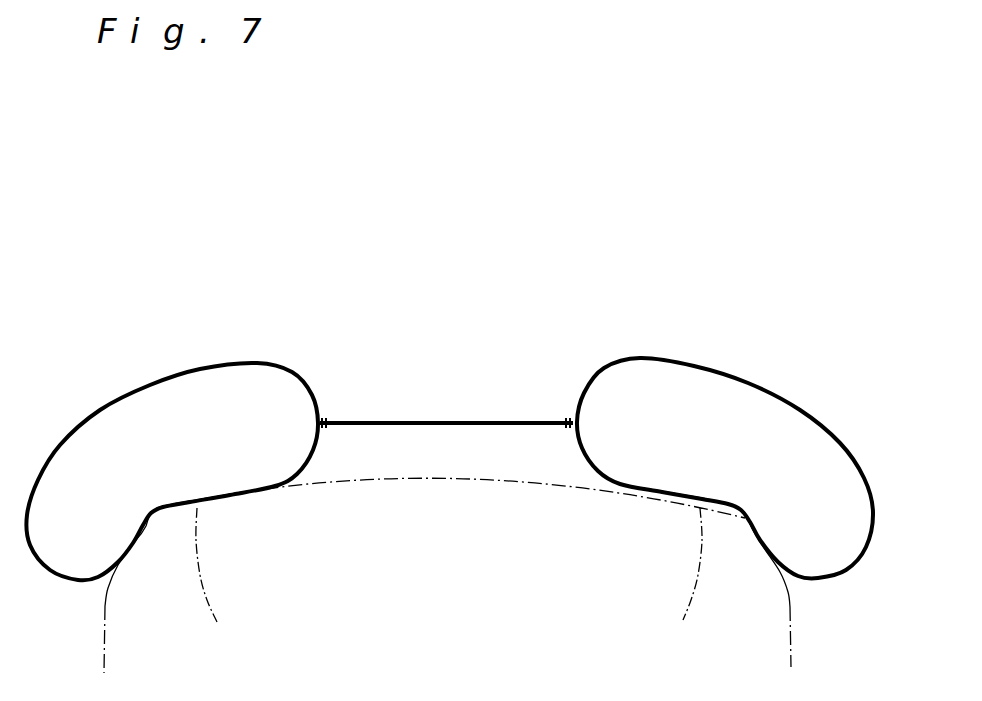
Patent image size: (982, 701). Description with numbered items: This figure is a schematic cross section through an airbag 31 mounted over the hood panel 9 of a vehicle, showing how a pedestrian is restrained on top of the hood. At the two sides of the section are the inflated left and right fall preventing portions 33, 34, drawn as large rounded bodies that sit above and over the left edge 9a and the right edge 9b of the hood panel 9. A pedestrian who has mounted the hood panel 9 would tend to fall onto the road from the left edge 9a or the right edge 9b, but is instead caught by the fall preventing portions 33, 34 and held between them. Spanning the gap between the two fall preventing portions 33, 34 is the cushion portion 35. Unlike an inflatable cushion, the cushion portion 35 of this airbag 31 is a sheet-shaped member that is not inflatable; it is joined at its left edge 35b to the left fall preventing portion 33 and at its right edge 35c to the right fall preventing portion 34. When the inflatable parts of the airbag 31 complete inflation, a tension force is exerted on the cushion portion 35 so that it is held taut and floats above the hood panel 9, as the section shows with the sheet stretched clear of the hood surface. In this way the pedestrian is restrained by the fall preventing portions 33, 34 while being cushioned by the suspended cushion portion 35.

The hood panel 9 is at (446, 487).
The left edge of the hood panel 9a is at (217, 583).
The right edge of the hood panel 9b is at (682, 581).
The airbag 31 is at (449, 395).
The left fall preventing portion 33 is at (265, 348).
The right fall preventing portion 34 is at (627, 345).
The cushion portion 35 is at (446, 342).
The left edge of the cushion portion 35b is at (322, 420).
The right edge of the cushion portion 35c is at (570, 420).